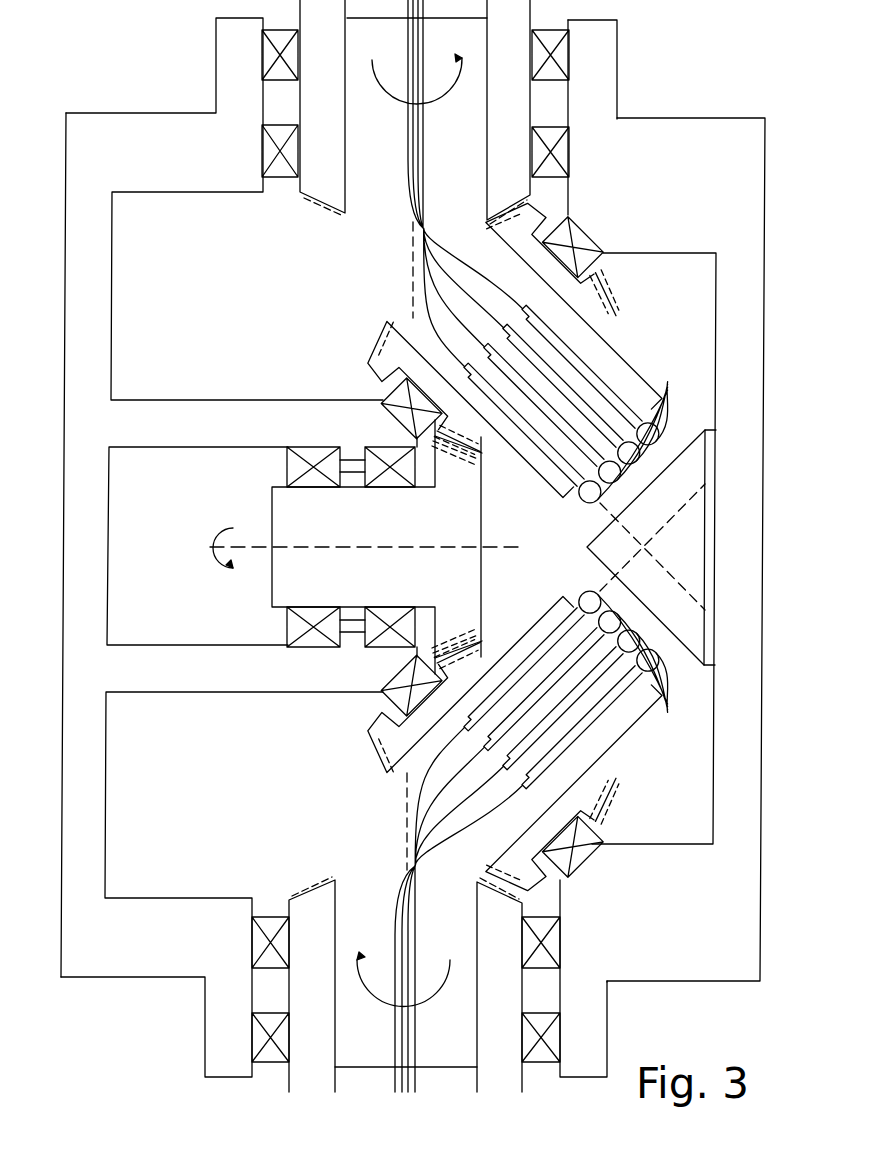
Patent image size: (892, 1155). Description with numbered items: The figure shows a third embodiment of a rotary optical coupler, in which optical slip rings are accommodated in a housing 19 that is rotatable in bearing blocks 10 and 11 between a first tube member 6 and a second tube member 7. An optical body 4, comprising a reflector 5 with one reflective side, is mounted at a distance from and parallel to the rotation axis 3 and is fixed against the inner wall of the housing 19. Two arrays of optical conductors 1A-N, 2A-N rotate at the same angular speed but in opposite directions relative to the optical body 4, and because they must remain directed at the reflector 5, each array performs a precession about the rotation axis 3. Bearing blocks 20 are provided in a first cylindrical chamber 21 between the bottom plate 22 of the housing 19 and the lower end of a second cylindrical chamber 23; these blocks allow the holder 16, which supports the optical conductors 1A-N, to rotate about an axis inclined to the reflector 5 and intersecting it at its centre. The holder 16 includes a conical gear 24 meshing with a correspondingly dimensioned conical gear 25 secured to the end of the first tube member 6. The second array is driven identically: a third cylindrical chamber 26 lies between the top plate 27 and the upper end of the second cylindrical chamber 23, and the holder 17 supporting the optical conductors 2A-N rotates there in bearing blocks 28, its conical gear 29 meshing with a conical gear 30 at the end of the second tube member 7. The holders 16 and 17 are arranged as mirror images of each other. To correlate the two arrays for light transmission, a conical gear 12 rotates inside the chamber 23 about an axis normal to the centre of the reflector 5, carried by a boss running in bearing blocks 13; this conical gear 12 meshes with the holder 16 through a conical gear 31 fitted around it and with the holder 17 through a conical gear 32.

The rotation axis 3 is at (404, 546).
The optical body 4 is at (676, 470).
The reflector 5 is at (707, 548).
The first tube member 6 is at (405, 979).
The second tube member 7 is at (415, 114).
The bearing blocks 10 is at (256, 1030).
The bearing blocks 11 is at (264, 144).
The conical gear 12 is at (367, 547).
The bearing blocks 13 is at (375, 492).
The holder 16 is at (531, 636).
The holder 17 is at (540, 466).
The housing 19 is at (74, 455).
The bearing blocks 20 is at (404, 680).
The first cylindrical chamber 21 is at (504, 745).
The bottom plate 22 is at (641, 941).
The second cylindrical chamber 23 is at (197, 546).
The conical gear 24 is at (381, 766).
The conical gear 25 is at (316, 894).
The third cylindrical chamber 26 is at (506, 350).
The top plate 27 is at (650, 160).
The bearing blocks 28 is at (580, 243).
The conical gear 29 is at (490, 229).
The conical gear 30 is at (331, 203).
The conical gear 31 is at (603, 790).
The conical gear 32 is at (603, 316).
The array of optical conductors 1A-N is at (633, 671).
The array of optical conductors 2A-N is at (636, 432).